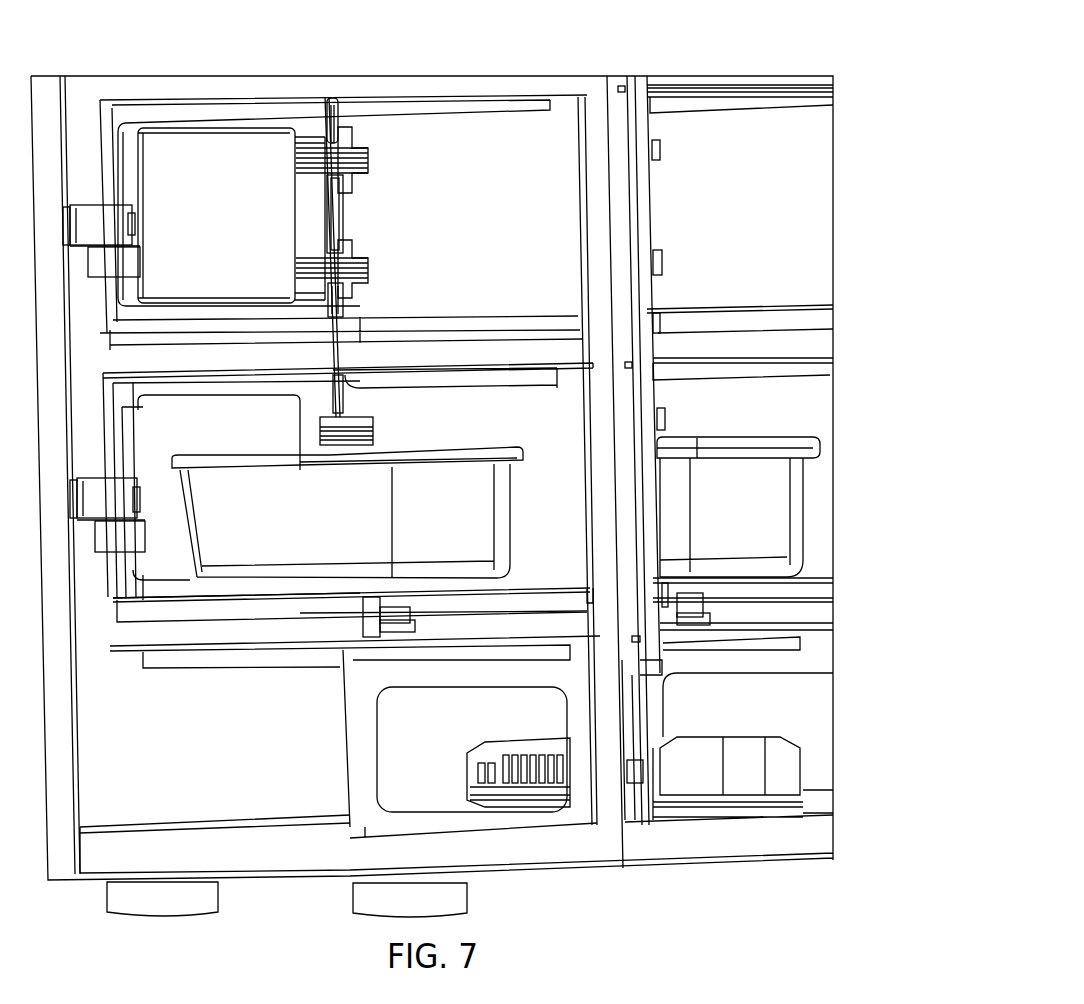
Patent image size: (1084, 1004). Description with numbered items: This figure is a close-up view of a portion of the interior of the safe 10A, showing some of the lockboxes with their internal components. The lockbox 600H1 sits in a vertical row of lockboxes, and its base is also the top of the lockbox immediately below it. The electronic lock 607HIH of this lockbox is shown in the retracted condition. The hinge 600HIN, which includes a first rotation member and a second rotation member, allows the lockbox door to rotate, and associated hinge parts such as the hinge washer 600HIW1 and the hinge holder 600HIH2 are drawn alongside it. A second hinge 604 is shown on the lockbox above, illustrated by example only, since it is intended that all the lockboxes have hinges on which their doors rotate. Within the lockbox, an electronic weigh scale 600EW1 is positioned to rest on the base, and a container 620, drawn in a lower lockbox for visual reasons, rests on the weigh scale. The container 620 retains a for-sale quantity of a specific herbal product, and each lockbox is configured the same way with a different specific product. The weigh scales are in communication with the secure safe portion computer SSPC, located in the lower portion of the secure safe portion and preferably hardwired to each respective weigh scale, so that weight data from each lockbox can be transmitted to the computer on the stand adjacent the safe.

The refrigerator appliance 10A is at (468, 66).
The container 620 is at (220, 234).
The electronic lock 607HIH is at (83, 213).
The lockbox 600H1 is at (362, 130).
The hinge 600HIN is at (332, 96).
The hinge washer 600HIW1 is at (370, 153).
The second hinge 604 is at (370, 237).
The hinge holder 600HIH2 is at (370, 265).
The electronic weigh scale 600EW1 is at (163, 585).
The secure safe portion computer SSPC is at (522, 772).